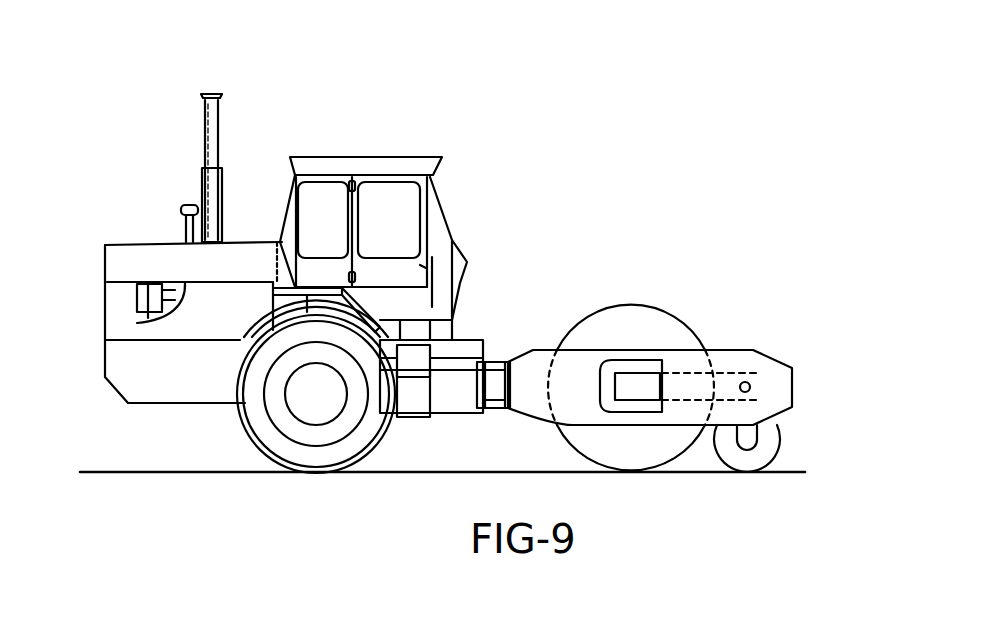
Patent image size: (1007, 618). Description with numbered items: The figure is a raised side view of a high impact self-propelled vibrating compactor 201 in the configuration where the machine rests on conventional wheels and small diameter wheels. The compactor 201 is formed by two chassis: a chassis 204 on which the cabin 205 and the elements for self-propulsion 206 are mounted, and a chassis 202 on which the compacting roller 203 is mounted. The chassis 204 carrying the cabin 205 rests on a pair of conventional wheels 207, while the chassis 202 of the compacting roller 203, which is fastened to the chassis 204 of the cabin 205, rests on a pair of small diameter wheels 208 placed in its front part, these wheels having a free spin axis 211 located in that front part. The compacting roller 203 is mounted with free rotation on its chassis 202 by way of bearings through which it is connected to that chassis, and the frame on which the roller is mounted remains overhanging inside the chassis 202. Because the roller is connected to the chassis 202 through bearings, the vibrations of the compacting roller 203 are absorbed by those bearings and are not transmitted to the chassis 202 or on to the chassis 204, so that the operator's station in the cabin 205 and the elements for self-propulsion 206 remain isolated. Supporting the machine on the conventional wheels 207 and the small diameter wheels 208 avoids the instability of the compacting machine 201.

The high impact self-propelled vibrating compactor 201 is at (527, 270).
The chassis of the compacting roller 202 is at (770, 357).
The compacting roller 203 is at (617, 320).
The chassis of the cabin 204 is at (178, 403).
The cabin 205 is at (373, 157).
The elements for self-propulsion 206 is at (163, 290).
The conventional wheels 207 is at (302, 457).
The small diameter wheels 208 is at (747, 460).
The free spin axis 211 is at (750, 390).